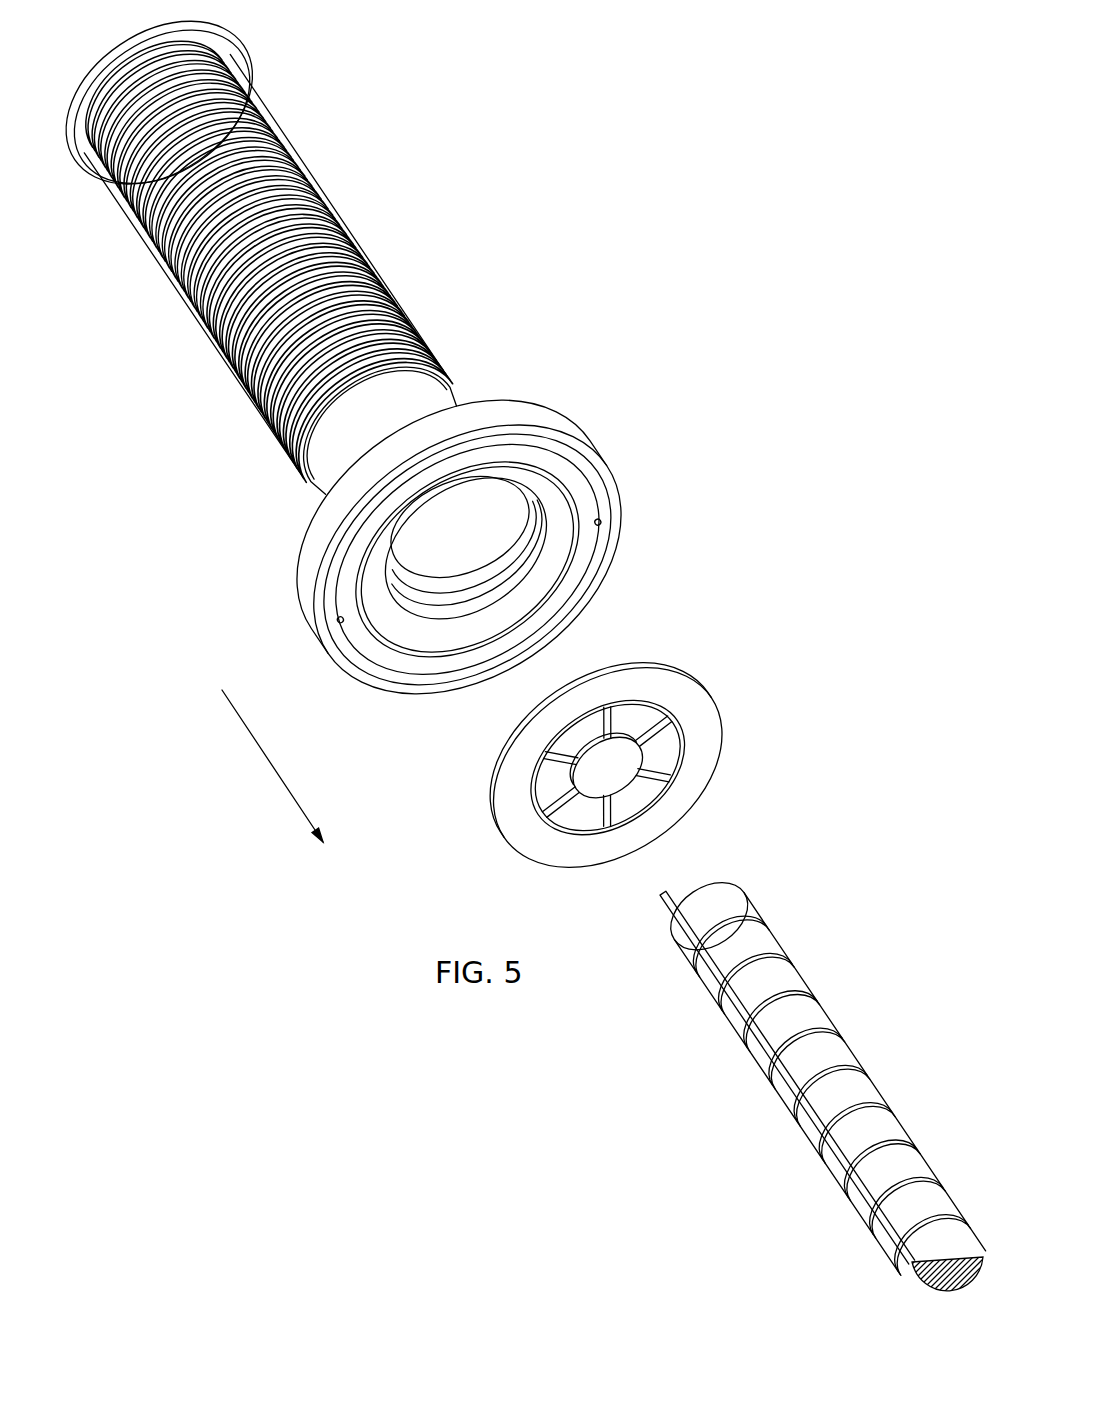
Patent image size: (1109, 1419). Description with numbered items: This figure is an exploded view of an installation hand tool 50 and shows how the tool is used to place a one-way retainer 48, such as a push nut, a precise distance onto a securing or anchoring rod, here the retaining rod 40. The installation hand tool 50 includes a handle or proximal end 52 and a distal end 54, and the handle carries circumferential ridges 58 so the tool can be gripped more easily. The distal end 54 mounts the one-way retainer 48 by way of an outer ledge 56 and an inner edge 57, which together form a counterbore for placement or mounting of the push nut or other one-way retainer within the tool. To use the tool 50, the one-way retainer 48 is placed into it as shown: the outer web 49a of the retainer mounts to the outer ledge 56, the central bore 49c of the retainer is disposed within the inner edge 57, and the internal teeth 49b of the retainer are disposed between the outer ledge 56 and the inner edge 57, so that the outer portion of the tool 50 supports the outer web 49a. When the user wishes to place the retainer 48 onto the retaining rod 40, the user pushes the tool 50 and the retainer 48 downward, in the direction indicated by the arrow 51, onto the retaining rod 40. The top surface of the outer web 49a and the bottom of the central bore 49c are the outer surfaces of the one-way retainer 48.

The retaining rod 40 is at (747, 908).
The one-way retainer 48 is at (722, 743).
The outer web 49a is at (690, 788).
The internal teeth 49b is at (632, 720).
The central bore 49c is at (593, 747).
The installation hand tool 50 is at (602, 288).
The arrow 51 is at (255, 742).
The handle or proximal end 52 is at (224, 52).
The distal end 54 is at (600, 535).
The outer ledge 56 is at (368, 606).
The inner edge 57 is at (520, 553).
The circumferential ridges 58 is at (262, 424).